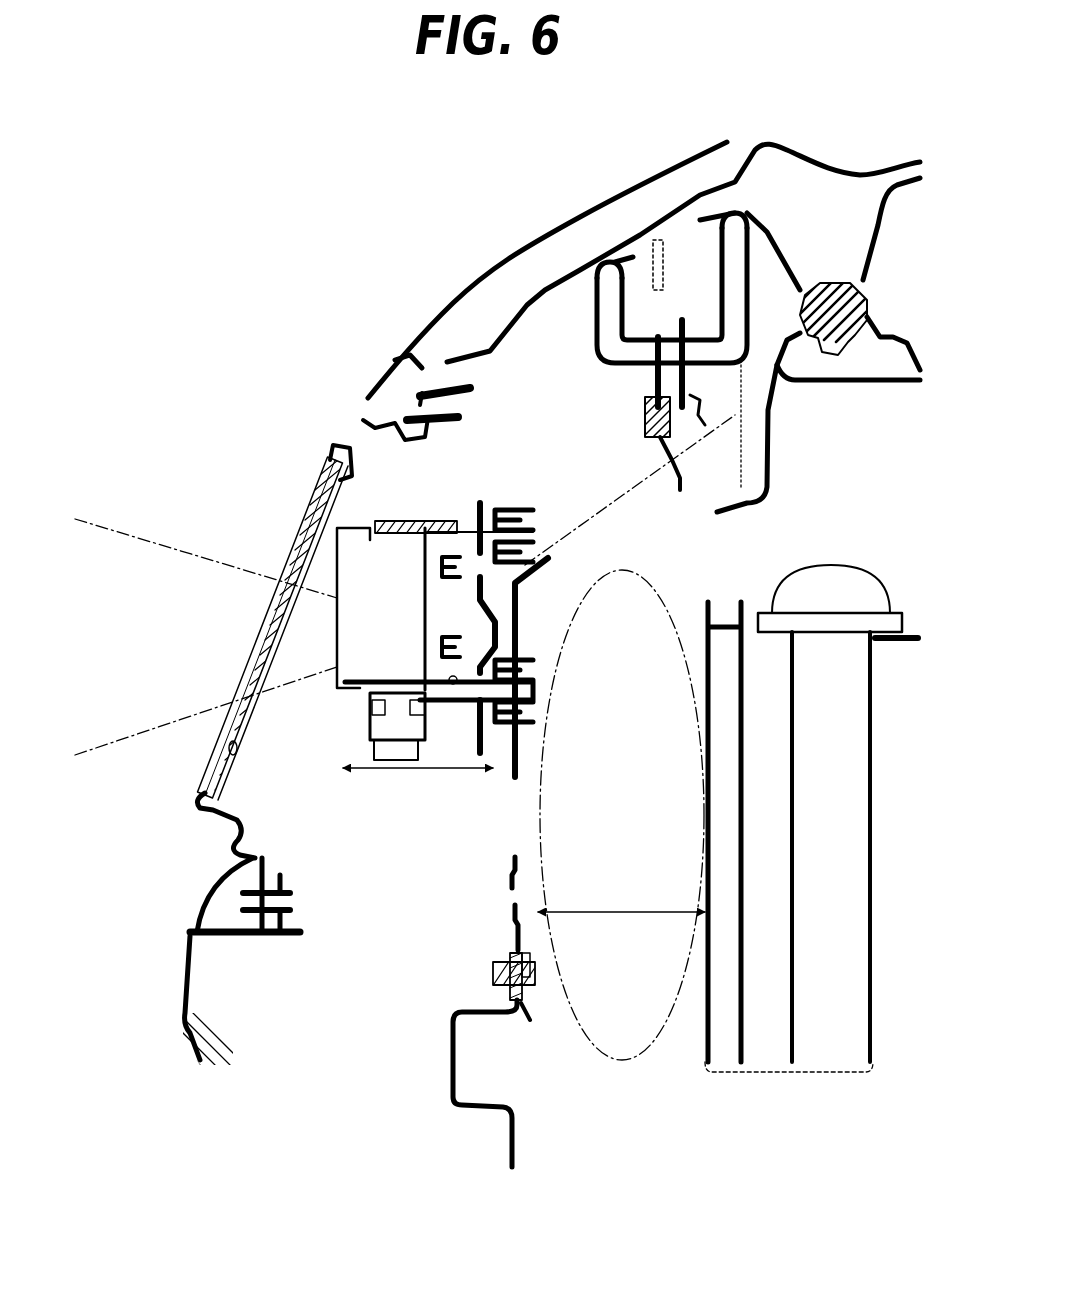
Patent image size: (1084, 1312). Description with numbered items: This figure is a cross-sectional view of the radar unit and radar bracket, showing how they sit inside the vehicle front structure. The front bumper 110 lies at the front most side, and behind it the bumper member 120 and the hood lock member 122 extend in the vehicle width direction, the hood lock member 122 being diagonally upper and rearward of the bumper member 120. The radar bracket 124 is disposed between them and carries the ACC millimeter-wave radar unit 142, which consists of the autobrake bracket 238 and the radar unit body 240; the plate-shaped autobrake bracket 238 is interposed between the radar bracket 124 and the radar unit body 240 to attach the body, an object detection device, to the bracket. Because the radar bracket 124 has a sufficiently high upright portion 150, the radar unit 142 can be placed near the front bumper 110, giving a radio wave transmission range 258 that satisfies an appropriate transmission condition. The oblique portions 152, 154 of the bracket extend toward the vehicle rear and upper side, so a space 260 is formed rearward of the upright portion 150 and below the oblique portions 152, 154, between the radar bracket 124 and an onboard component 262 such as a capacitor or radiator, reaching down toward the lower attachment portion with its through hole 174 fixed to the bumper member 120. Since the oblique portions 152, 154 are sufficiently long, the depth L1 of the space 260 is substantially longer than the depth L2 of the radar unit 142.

The front bumper 110 is at (300, 515).
The bumper member 120 is at (503, 1023).
The hood lock member 122 is at (780, 368).
The radar bracket 124 is at (508, 775).
The ACC millimeter-wave radar unit 142 is at (425, 512).
The upright portion 150 is at (508, 872).
The oblique portion 152 is at (606, 411).
The oblique portion 154 is at (670, 363).
The through hole 174 is at (510, 918).
The autobrake bracket 238 is at (488, 508).
The radar unit body 240 is at (352, 582).
The radio wave transmission range 258 is at (287, 688).
The space 260 is at (625, 1065).
The onboard component 262 is at (811, 839).
The depth of the space L1 is at (634, 916).
The depth of the radar unit L2 is at (418, 770).